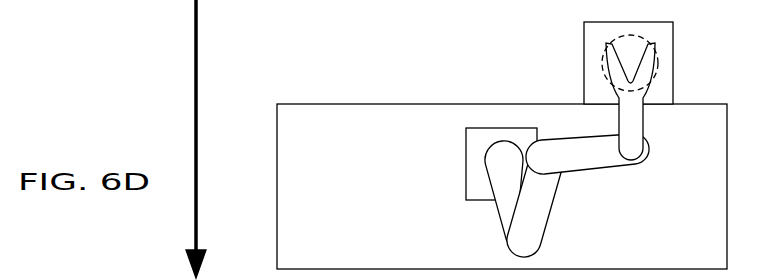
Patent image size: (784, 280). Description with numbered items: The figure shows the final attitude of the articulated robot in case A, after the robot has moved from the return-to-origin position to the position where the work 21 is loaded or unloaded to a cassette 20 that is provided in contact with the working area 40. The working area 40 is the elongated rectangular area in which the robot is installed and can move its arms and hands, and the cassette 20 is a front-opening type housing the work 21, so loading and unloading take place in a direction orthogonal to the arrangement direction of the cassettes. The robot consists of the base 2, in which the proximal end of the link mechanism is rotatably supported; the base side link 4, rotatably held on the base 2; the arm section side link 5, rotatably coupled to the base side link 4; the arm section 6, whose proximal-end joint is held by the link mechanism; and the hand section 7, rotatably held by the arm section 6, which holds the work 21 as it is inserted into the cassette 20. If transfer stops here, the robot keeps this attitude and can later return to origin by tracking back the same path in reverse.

The working area 40 is at (382, 110).
The cassette 20 is at (588, 46).
The work 21 is at (660, 58).
The base 2 is at (468, 140).
The base side link 4 is at (508, 203).
The arm section side link 5 is at (543, 215).
The arm section 6 is at (605, 163).
The hand section 7 is at (637, 122).